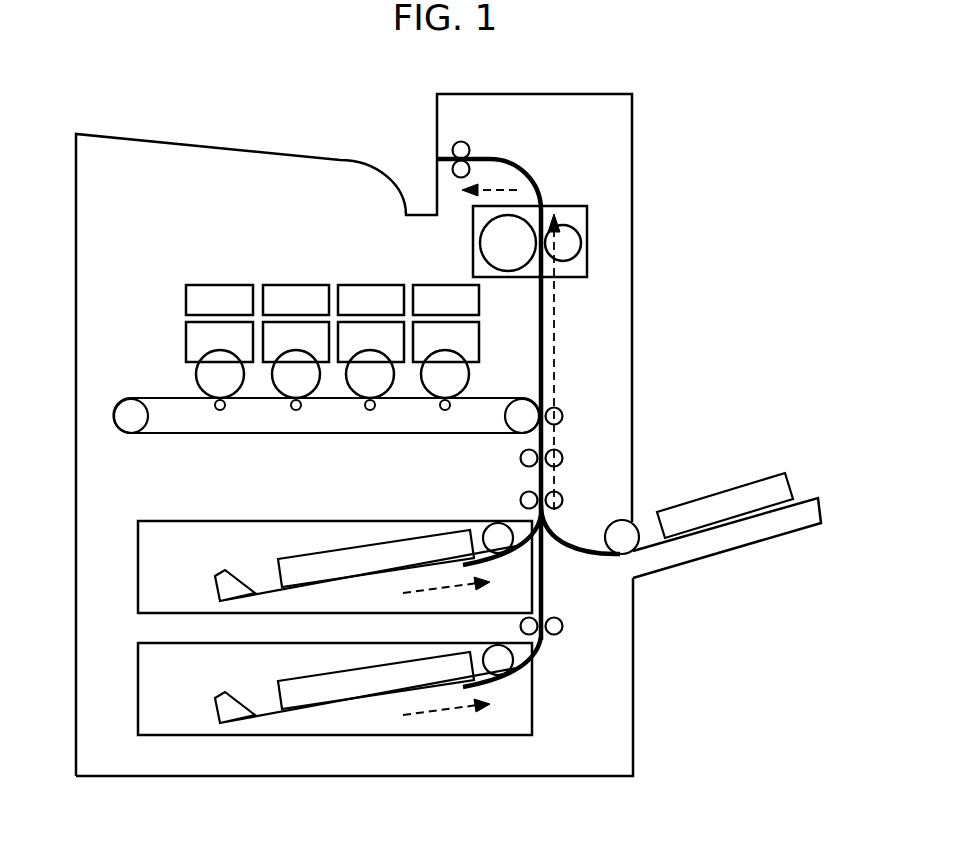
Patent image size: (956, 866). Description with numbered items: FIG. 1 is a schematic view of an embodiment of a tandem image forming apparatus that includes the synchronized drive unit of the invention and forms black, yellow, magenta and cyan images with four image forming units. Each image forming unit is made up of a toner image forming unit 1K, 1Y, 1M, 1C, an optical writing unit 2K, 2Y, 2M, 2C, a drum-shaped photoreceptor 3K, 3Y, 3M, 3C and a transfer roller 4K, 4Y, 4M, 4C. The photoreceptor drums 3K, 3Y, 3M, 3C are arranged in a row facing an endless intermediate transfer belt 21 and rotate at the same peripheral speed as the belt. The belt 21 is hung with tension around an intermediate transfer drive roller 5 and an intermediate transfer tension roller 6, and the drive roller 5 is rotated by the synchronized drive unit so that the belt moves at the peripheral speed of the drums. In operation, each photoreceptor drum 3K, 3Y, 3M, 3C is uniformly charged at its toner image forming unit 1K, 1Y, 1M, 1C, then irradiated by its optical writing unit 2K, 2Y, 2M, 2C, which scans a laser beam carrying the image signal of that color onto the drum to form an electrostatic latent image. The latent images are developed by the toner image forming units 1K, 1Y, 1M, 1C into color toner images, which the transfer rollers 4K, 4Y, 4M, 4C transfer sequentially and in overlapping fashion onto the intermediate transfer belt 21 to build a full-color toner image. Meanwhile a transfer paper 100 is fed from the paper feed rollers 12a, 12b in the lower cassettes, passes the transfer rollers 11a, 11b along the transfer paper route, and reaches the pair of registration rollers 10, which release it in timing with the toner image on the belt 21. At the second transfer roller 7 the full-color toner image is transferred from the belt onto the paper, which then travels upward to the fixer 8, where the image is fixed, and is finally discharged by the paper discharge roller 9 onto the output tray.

The toner image forming unit 1K is at (208, 327).
The toner image forming unit 1Y is at (282, 327).
The toner image forming unit 1M is at (355, 327).
The toner image forming unit 1C is at (481, 341).
The optical writing unit 2K is at (232, 284).
The optical writing unit 2Y is at (307, 284).
The optical writing unit 2M is at (382, 284).
The optical writing unit 2C is at (481, 300).
The photoreceptor drum 3K is at (207, 385).
The photoreceptor drum 3Y is at (283, 385).
The photoreceptor drum 3M is at (356, 385).
The photoreceptor drum 3C is at (432, 385).
The transfer roller 4K is at (215, 409).
The transfer roller 4Y is at (291, 409).
The transfer roller 4M is at (365, 409).
The transfer roller 4C is at (440, 409).
The intermediate transfer drive roller 5 is at (523, 402).
The intermediate transfer tension roller 6 is at (148, 416).
The second transfer roller 7 is at (563, 416).
The fixer 8 is at (566, 206).
The paper discharge roller 9 is at (469, 151).
The pair of registration rollers 10 is at (563, 458).
The transfer roller 11a is at (563, 500).
The transfer roller 11b is at (563, 626).
The paper feed roller 12a is at (497, 522).
The paper feed roller 12b is at (505, 668).
The intermediate transfer belt 21 is at (163, 398).
The transfer paper 100 is at (278, 572).